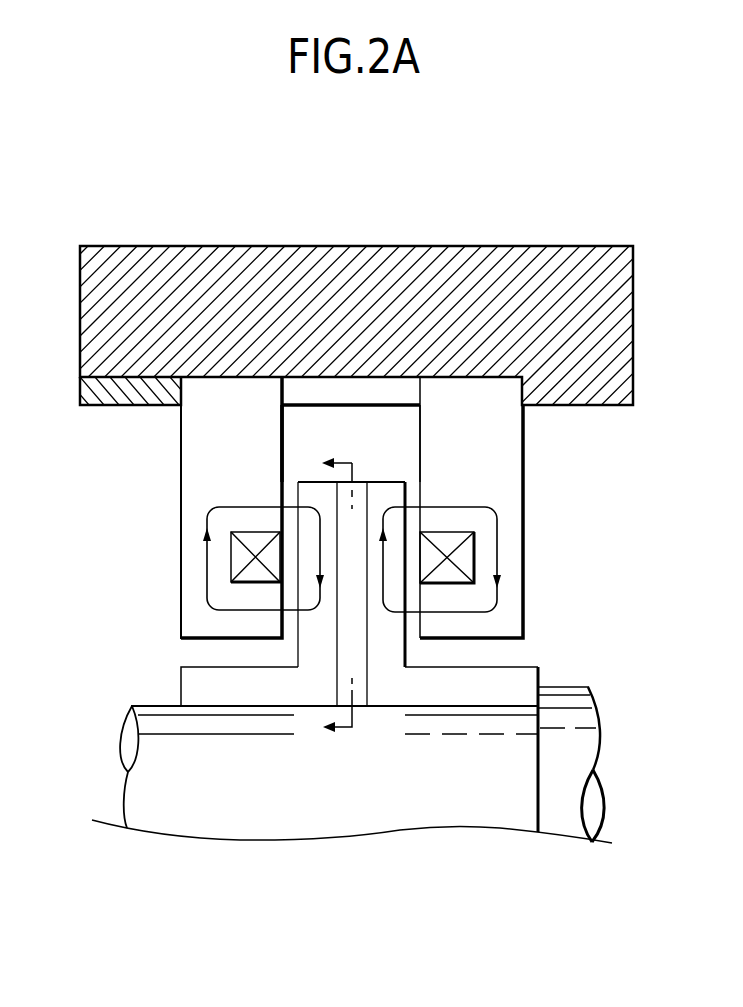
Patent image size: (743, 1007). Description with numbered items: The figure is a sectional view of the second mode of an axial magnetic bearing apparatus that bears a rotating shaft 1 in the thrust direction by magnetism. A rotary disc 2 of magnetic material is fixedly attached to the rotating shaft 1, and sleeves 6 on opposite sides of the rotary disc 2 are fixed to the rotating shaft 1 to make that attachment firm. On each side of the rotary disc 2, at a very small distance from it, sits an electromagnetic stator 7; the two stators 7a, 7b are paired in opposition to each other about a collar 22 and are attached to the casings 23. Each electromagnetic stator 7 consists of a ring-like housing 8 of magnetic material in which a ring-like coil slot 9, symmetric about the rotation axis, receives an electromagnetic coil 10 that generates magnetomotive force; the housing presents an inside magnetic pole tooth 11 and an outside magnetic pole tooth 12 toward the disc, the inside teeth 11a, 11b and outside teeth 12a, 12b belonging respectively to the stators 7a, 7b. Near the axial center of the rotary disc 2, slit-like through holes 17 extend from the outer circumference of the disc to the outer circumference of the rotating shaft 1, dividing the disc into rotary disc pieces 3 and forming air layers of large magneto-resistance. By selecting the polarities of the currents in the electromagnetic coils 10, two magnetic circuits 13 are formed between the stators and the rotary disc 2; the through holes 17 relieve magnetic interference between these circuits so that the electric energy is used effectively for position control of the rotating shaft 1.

The rotating shaft 1 is at (157, 745).
The rotary disc 2 is at (315, 482).
The rotary disc pieces 3 is at (310, 493).
The sleeves 6 is at (205, 683).
The electromagnetic stator 7 is at (352, 258).
The electromagnetic stator 7a is at (247, 403).
The electromagnetic stator 7b is at (457, 403).
The ring-like housing 8 is at (205, 430).
The coil slot 9 is at (231, 553).
The electromagnetic coil 10 is at (250, 572).
The inside magnetic pole tooth 11 is at (350, 730).
The first gap 11a is at (283, 623).
The second gap 11b is at (418, 623).
The outside magnetic pole tooth 12 is at (471, 443).
The first gap 12a is at (282, 446).
The second gap 12b is at (420, 460).
The magnetic circuits 13 is at (207, 519).
The slit-like through holes 17 is at (358, 688).
The collar 22 is at (347, 390).
The casings 23 is at (137, 265).